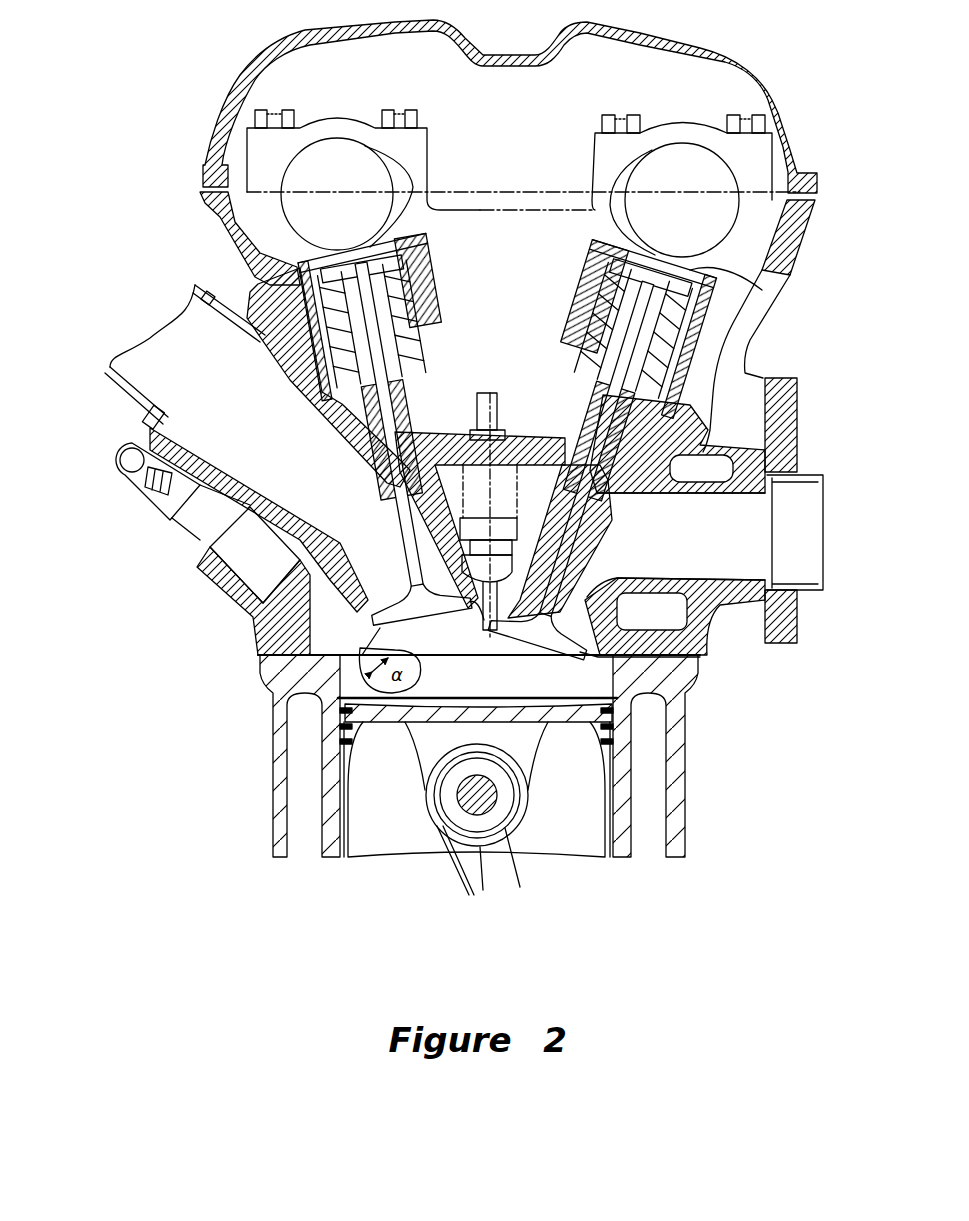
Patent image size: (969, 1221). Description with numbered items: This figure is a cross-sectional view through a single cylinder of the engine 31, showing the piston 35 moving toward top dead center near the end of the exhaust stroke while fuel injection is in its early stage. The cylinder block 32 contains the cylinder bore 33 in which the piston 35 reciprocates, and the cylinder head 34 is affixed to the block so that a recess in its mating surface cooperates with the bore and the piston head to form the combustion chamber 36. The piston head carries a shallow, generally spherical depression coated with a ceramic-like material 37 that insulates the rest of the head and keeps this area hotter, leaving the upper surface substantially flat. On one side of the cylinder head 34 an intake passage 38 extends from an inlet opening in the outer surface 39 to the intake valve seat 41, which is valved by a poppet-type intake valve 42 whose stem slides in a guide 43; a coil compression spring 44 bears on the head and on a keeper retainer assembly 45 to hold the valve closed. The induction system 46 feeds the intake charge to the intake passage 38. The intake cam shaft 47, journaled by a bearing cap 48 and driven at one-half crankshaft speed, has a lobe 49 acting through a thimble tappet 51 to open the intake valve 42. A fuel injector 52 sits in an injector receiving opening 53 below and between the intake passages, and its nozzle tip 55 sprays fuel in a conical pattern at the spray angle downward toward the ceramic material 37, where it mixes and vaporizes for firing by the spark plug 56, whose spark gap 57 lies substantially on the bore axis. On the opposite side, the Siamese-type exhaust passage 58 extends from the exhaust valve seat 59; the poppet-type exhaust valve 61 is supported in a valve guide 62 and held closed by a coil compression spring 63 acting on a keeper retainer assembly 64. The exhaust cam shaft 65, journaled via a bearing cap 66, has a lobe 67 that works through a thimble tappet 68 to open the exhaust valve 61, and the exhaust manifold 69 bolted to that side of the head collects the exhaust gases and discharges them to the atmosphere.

The engine 31 is at (808, 146).
The cylinder block 32 is at (673, 774).
The cylinder bore 33 is at (597, 814).
The cylinder head 34 is at (710, 397).
The piston 35 is at (595, 711).
The combustion chamber 36 is at (430, 683).
The ceramic-like material 37 is at (508, 698).
The intake passage 38 is at (278, 530).
The outer surface of the cylinder head 39 is at (147, 410).
The intake valve seat 41 is at (433, 423).
The intake valve 42 is at (612, 430).
The valve guide 43 is at (430, 393).
The coil compression spring 44 is at (430, 297).
The keeper retainer assembly 45 is at (403, 238).
The induction system 46 is at (108, 378).
The intake cam shaft 47 is at (363, 175).
The bearing cap 48 is at (352, 112).
The cam lobe 49 is at (413, 170).
The thimble tappet 51 is at (112, 469).
The fuel injector 52 is at (205, 540).
The injector receiving opening 53 is at (233, 600).
The nozzle tip 55 is at (283, 725).
The spark plug 56 is at (507, 493).
The spark gap 57 is at (488, 636).
The exhaust passage 58 is at (720, 573).
The exhaust valve seat 59 is at (618, 576).
The exhaust valve 61 is at (573, 612).
The valve guide 62 is at (667, 488).
The coil compression spring 63 is at (733, 330).
The keeper retainer assembly 64 is at (775, 264).
The exhaust cam shaft 65 is at (647, 175).
The bearing cap 66 is at (680, 117).
The cam lobe 67 is at (633, 235).
The thimble tappet 68 is at (580, 275).
The exhaust manifold 69 is at (799, 449).